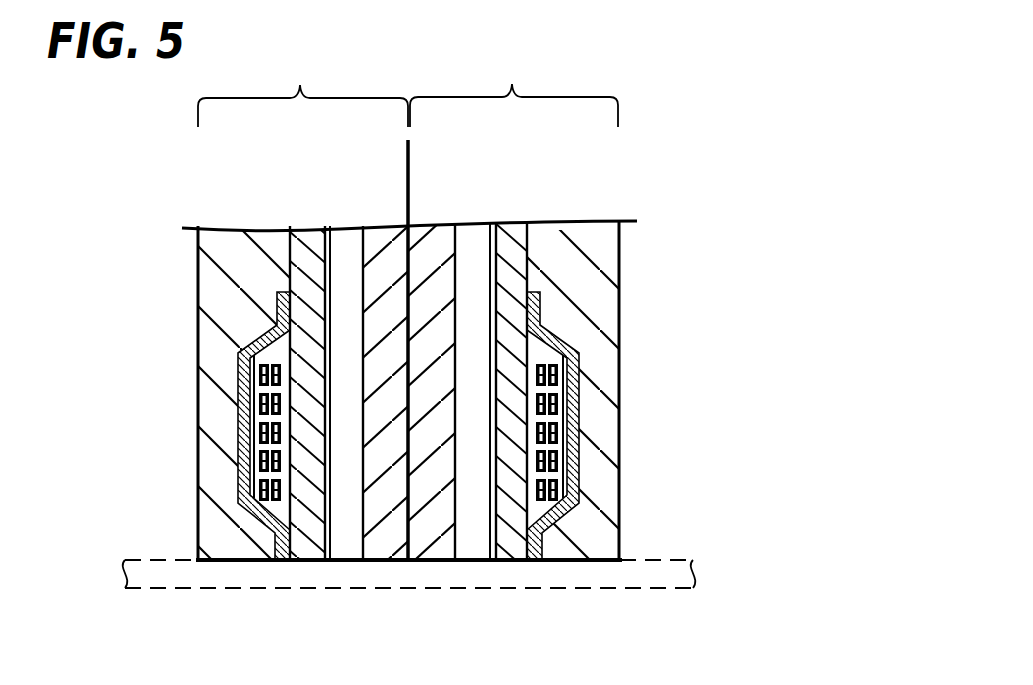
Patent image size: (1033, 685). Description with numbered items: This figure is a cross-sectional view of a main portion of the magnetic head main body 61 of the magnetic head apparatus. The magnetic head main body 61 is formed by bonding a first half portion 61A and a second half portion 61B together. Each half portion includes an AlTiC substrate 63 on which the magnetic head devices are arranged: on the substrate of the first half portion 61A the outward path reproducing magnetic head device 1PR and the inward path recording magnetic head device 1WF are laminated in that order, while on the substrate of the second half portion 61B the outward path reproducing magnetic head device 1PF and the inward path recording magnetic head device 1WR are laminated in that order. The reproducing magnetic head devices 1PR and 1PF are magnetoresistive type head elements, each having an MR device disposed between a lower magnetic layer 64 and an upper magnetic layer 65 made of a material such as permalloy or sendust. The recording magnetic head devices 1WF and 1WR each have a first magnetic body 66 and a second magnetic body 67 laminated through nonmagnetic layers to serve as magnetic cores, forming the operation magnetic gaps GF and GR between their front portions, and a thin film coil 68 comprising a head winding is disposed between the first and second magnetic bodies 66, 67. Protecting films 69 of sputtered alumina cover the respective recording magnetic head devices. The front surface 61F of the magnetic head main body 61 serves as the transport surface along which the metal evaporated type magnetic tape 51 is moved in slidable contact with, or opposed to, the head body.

The magnetic head main body 61 is at (706, 435).
The first half portion 61A is at (514, 91).
The second half portion 61B is at (303, 91).
The front surface 61F is at (583, 566).
The AlTiC substrate 63 is at (378, 230).
The lower magnetic layer 64 is at (347, 230).
The upper magnetic layer 65 is at (305, 230).
The first magnetic body 66 is at (278, 323).
The second magnetic body 67 is at (250, 368).
The thin film coil 68 is at (262, 381).
The protecting film 69 is at (213, 513).
The inward path recording magnetic head device 1WR is at (237, 478).
The inward path recording magnetic head device 1WF is at (581, 480).
The operation magnetic gap GR is at (262, 541).
The operation magnetic gap GF is at (555, 542).
The outward path reproducing magnetic head device 1PF is at (328, 560).
The outward path reproducing magnetic head device 1PR is at (492, 560).
The metal evaporated type magnetic tape 51 is at (695, 576).